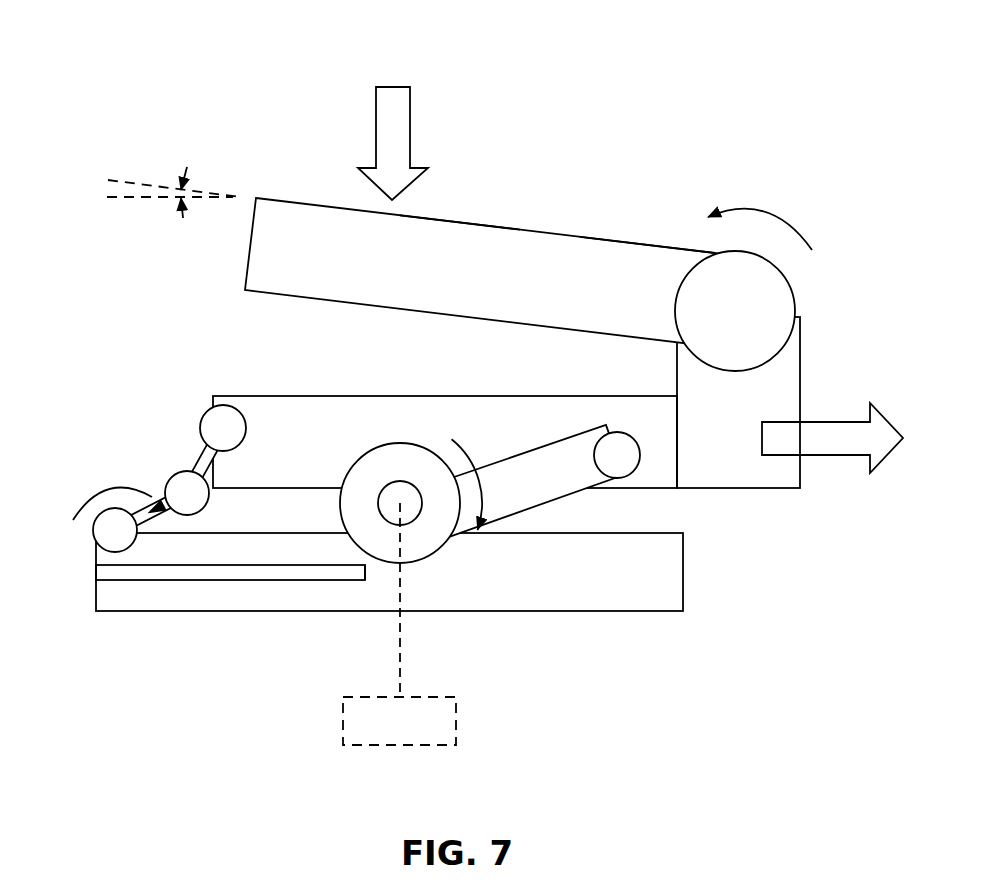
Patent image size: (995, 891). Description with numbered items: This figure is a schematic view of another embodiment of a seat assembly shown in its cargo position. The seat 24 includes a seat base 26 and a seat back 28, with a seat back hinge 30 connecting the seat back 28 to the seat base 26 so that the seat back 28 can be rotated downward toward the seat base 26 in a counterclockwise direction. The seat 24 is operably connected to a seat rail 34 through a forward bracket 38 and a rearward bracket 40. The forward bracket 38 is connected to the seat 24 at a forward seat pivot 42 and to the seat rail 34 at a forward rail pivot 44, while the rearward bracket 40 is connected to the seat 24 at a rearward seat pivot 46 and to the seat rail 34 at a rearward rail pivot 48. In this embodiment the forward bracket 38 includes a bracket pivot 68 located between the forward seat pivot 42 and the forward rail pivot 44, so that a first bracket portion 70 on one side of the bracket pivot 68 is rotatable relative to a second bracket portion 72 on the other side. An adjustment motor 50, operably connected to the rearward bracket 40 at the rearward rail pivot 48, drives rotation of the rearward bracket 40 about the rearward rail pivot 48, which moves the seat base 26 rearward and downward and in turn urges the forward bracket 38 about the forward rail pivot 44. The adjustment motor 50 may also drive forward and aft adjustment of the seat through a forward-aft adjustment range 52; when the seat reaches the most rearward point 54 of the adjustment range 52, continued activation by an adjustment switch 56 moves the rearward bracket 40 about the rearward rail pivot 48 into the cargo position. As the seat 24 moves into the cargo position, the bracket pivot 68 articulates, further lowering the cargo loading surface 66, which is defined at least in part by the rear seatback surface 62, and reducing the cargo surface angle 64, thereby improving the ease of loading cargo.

The seat 24 is at (108, 60).
The seat base 26 is at (287, 412).
The seat back 28 is at (542, 247).
The seat back hinge 30 is at (745, 262).
The seat rail 34 is at (151, 600).
The forward bracket 38 is at (95, 417).
The rearward bracket 40 is at (552, 488).
The forward seat pivot 42 is at (230, 405).
The forward rail pivot 44 is at (95, 532).
The rearward seat pivot 46 is at (620, 433).
The rearward rail pivot 48 is at (363, 540).
The adjustment motor 50 is at (403, 525).
The forward-aft adjustment range 52 is at (272, 572).
The most rearward point 54 is at (365, 568).
The adjustment switch 56 is at (399, 745).
The rear seatback surface 62 is at (467, 223).
The cargo surface angle 64 is at (187, 167).
The cargo loading surface 66 is at (633, 243).
The bracket pivot 68 is at (177, 470).
The first bracket portion 70 is at (155, 496).
The second bracket portion 72 is at (217, 458).